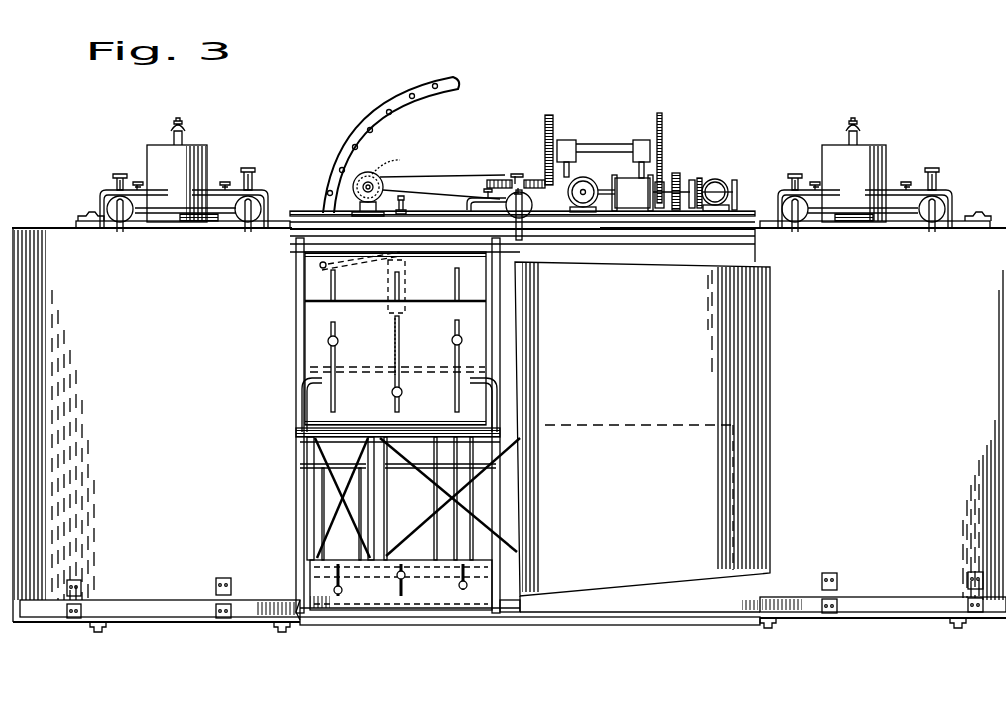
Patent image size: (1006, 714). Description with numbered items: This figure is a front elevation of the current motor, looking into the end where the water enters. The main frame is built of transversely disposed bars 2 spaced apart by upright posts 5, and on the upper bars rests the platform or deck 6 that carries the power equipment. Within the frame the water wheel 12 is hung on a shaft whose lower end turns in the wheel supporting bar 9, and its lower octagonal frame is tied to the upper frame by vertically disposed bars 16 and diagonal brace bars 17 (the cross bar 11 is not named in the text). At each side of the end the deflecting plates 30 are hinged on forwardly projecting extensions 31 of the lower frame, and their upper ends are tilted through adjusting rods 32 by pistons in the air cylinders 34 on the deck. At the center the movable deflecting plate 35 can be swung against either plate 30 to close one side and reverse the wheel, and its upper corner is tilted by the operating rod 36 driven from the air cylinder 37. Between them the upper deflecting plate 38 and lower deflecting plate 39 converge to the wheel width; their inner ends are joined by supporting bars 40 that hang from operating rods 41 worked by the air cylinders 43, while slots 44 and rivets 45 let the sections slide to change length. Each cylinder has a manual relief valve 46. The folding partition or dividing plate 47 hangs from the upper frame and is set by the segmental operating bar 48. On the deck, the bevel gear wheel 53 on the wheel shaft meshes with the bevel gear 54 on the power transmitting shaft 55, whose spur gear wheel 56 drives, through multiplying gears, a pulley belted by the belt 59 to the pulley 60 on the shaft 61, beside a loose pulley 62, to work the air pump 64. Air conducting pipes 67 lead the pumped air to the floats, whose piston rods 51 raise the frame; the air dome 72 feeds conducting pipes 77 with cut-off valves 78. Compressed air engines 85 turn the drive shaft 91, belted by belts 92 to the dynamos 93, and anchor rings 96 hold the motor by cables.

The transversely disposed bars 2 is at (740, 232).
The upright posts 5 is at (98, 633).
The platform or deck 6 is at (220, 230).
The wheel supporting bar 9 is at (506, 585).
The cross bar 11 is at (410, 530).
The water wheel 12 is at (330, 515).
The vertically disposed bars 16 is at (316, 530).
The diagonal brace bars 17 is at (370, 488).
The deflecting plates 30 is at (509, 425).
The forwardly projecting extensions 31 is at (147, 608).
The adjusting rods 32 is at (118, 232).
The air cylinders 34 is at (107, 210).
The movable deflecting plate 35 is at (642, 429).
The operating rod 36 is at (498, 178).
The air cylinder 37 is at (522, 180).
The upper deflecting plate 38 is at (310, 318).
The lower deflecting plate 39 is at (420, 598).
The supporting bars 40 is at (294, 447).
The operating rods 41 is at (298, 402).
The air cylinders 43 is at (403, 282).
The slots 44 is at (338, 402).
The rivets 45 is at (350, 344).
The relief valves 46 is at (112, 176).
The folding partition or dividing plate 47 is at (340, 275).
The segmental operating bar 48 is at (398, 98).
The piston rods 51 is at (676, 173).
The bevel gear wheel 53 is at (507, 196).
The bevel gear 54 is at (549, 116).
The power transmitting shaft 55 is at (588, 140).
The spur gear wheel 56 is at (662, 112).
The belt 59 is at (718, 177).
The pulley 60 is at (700, 178).
The shaft 61 is at (737, 176).
The loose pulley 62 is at (692, 180).
The air pump 64 is at (716, 190).
The air conducting pipes 67 is at (300, 210).
The air dome or chamber 72 is at (185, 150).
The conducting pipes 77 is at (155, 190).
The cut-off valves 78 is at (134, 182).
The compressed air engines 85 is at (628, 240).
The drive shaft 91 is at (580, 240).
The belts 92 is at (414, 176).
The dynamos 93 is at (358, 184).
The anchor rings 96 is at (304, 620).